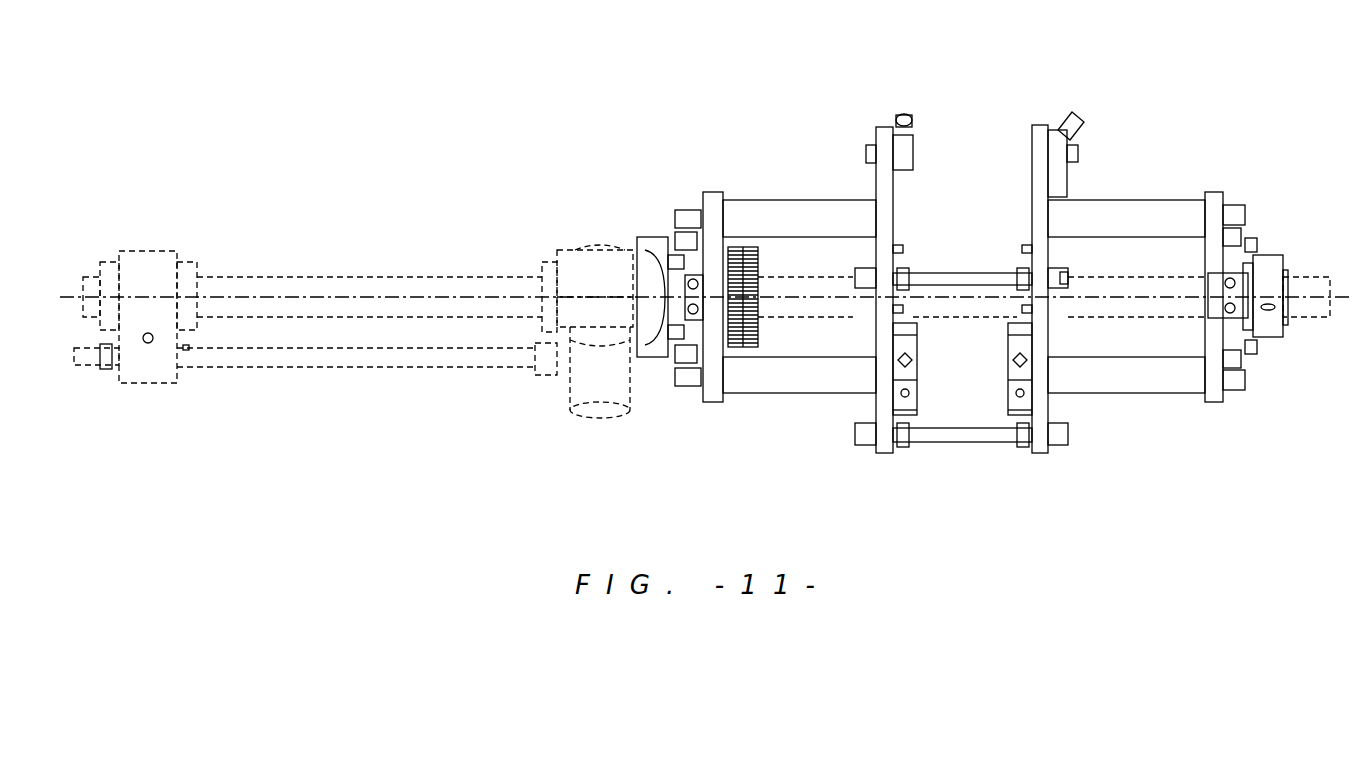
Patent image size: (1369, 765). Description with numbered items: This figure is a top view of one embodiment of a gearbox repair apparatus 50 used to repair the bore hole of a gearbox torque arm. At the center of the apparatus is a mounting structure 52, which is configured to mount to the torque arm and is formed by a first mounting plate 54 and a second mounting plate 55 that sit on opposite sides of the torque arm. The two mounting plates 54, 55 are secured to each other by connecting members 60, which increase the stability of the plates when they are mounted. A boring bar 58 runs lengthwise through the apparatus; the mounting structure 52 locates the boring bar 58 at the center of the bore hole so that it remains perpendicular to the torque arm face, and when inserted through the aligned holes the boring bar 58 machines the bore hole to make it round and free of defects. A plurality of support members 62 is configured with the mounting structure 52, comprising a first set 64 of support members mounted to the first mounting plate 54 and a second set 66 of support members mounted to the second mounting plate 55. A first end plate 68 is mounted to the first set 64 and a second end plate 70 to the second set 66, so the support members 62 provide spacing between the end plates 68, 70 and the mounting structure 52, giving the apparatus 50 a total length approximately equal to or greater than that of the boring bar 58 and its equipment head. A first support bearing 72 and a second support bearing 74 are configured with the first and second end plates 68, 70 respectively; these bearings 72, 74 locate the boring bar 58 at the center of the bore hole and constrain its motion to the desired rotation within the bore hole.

The gearbox repair apparatus 50 is at (705, 164).
The mounting structure 52 is at (952, 288).
The first mounting plate 54 is at (876, 178).
The second mounting plate 55 is at (1032, 212).
The boring bar 58 is at (325, 268).
The connecting members 60 is at (962, 290).
The support members 62 is at (768, 195).
The first set of support members 64 is at (815, 212).
The second set of support members 66 is at (1120, 212).
The first end plate 68 is at (713, 191).
The second end plate 70 is at (1210, 405).
The first support bearing 72 is at (650, 230).
The second support bearing 74 is at (1272, 238).